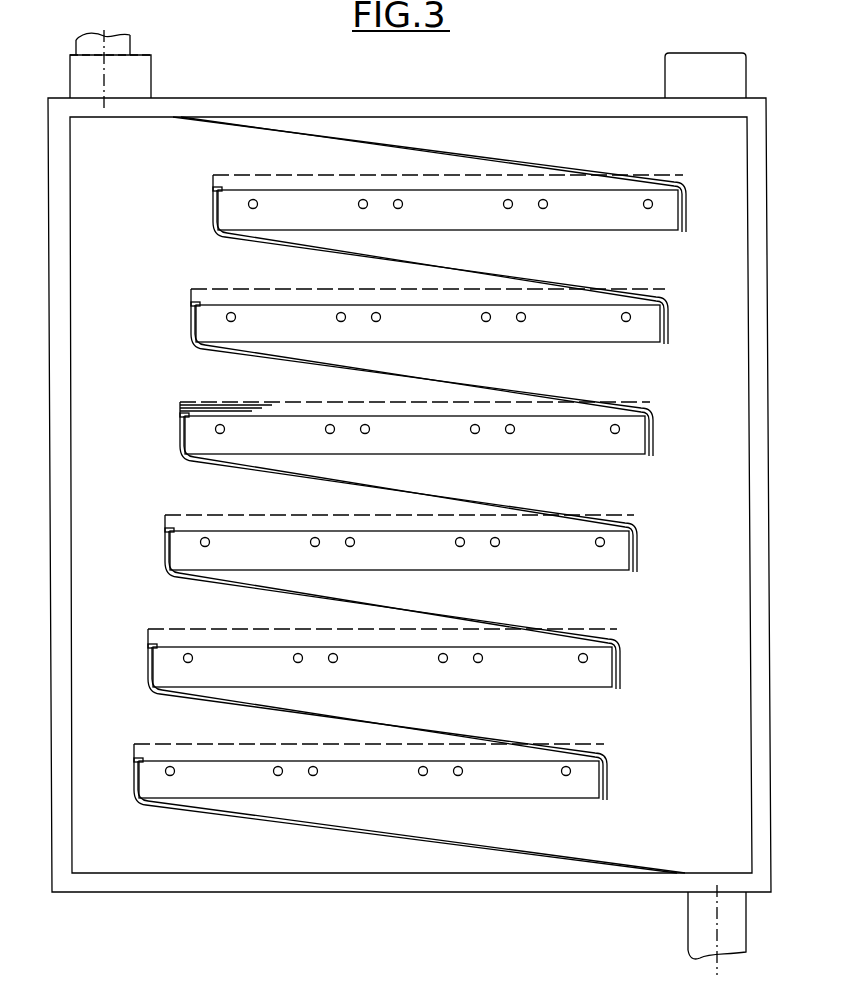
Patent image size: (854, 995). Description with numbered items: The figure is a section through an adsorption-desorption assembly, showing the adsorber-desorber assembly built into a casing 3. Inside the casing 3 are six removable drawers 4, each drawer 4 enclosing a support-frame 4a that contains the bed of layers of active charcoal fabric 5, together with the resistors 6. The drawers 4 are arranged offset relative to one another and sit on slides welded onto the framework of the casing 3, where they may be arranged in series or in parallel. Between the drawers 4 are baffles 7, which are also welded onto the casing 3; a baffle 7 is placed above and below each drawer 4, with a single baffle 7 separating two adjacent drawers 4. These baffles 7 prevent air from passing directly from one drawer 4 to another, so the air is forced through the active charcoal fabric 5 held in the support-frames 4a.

The casing 3 is at (57, 263).
The removable drawer 4 is at (145, 548).
The support-frame 4a is at (176, 522).
The bed of layers of active charcoal fabric 5 is at (185, 410).
The resistors 6 is at (199, 545).
The baffle 7 is at (185, 583).